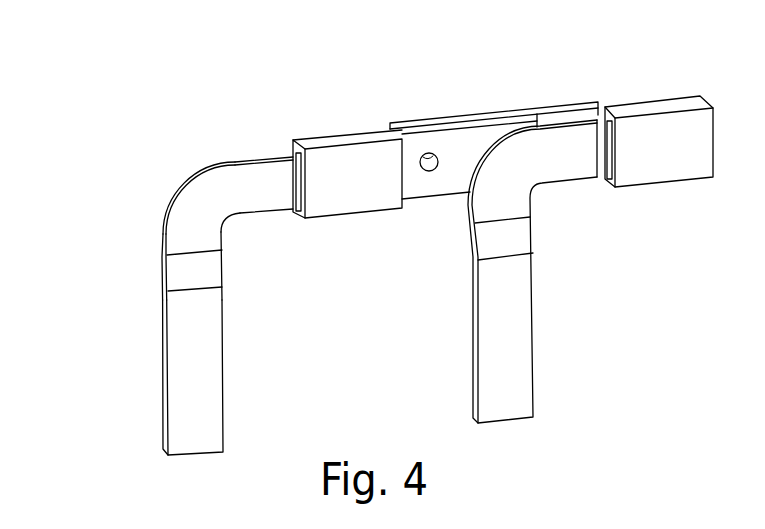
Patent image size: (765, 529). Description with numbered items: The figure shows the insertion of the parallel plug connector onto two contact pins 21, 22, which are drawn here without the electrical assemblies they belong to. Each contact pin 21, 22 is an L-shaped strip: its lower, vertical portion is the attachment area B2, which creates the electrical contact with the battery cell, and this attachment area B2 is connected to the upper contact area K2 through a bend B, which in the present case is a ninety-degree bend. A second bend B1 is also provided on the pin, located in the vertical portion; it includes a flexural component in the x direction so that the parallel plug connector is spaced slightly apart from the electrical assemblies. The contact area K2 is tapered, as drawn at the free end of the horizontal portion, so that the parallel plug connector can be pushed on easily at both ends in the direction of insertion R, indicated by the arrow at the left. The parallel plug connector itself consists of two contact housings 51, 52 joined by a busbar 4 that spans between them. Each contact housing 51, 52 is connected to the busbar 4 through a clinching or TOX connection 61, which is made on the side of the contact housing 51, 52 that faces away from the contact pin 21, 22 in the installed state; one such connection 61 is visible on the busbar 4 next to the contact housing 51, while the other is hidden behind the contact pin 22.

The busbar 4 is at (496, 110).
The contact pin 21 is at (205, 267).
The contact pin 22 is at (541, 345).
The contact housing 51 is at (347, 129).
The contact housing 52 is at (657, 100).
The clinching or TOX connection 61 is at (433, 176).
The bend B is at (184, 206).
The second bend B1 is at (190, 272).
The attachment area B2 is at (191, 408).
The contact area K2 is at (254, 150).
The direction of insertion R is at (137, 183).